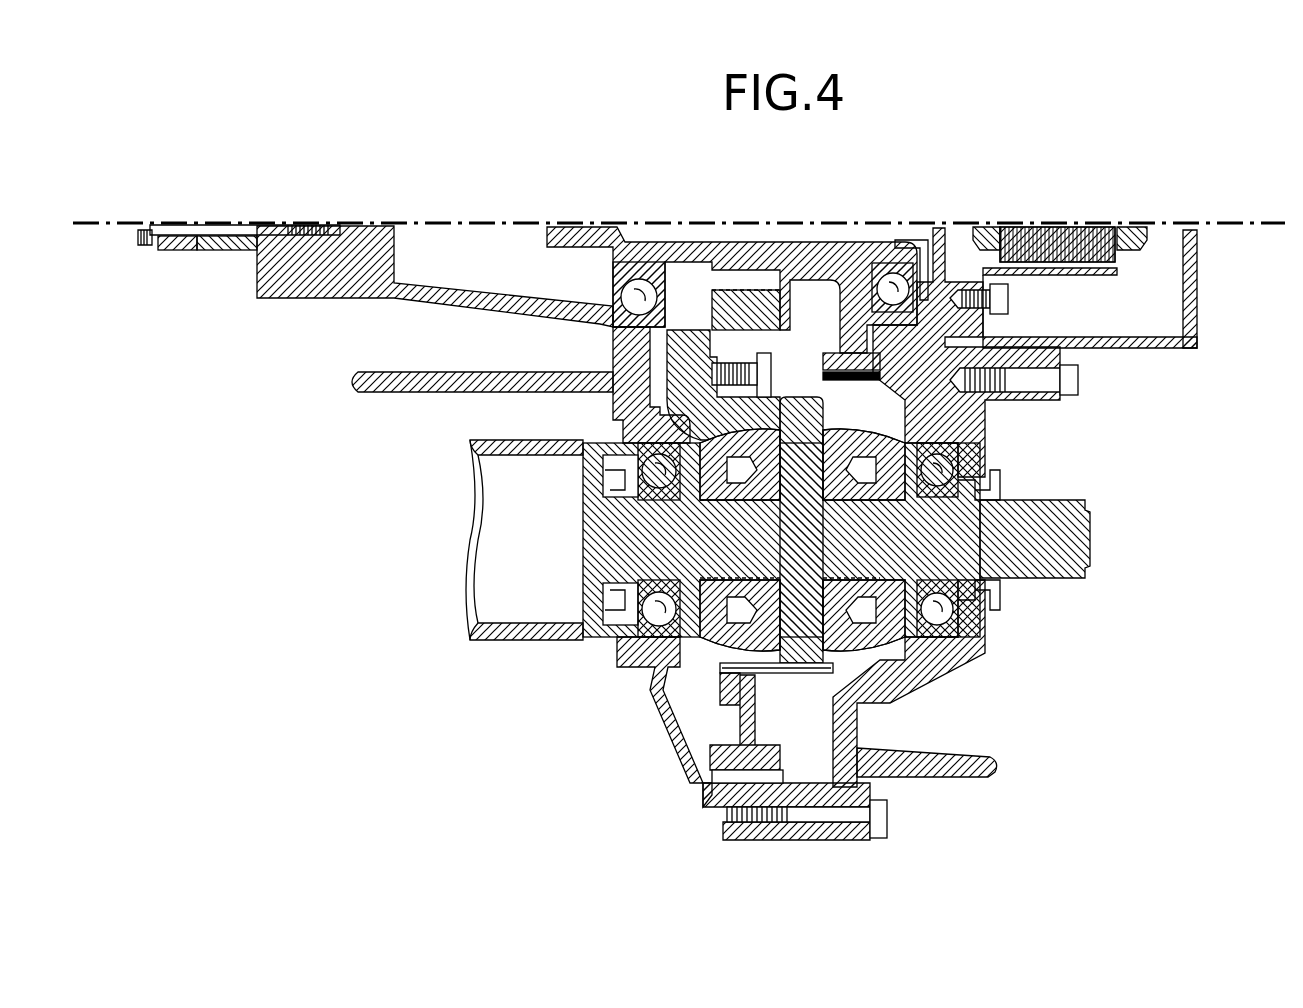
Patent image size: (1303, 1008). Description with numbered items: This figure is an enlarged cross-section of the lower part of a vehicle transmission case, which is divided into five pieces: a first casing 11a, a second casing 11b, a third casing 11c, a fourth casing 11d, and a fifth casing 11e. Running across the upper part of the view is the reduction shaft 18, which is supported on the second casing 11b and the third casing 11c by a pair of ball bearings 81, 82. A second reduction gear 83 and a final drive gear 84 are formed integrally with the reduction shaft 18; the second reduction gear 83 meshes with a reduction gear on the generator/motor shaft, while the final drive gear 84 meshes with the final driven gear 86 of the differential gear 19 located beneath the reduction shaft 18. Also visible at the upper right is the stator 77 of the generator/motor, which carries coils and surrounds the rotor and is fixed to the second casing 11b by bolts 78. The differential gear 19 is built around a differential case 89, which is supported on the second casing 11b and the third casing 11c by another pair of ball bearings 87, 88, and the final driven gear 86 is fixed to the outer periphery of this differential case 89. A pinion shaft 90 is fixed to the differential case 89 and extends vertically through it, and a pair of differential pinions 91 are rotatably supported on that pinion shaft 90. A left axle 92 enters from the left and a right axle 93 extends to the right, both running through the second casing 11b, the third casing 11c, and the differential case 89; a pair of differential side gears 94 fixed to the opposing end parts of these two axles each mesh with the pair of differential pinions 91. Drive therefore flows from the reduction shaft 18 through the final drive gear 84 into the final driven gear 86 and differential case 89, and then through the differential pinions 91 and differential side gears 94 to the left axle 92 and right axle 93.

The reduction shaft 18 is at (790, 258).
The differential gear 19 is at (698, 683).
The first casing 11a is at (1108, 345).
The second casing 11b is at (918, 777).
The third casing 11c is at (325, 283).
The fourth casing 11d is at (222, 250).
The fifth casing 11e is at (183, 243).
The stator 77 is at (1117, 284).
The bolts 78 is at (1010, 300).
The ball bearing 81 is at (893, 288).
The ball bearing 82 is at (640, 296).
The second reduction gear 83 is at (870, 375).
The final drive gear 84 is at (708, 295).
The final driven gear 86 is at (790, 322).
The ball bearing 87 is at (943, 612).
The ball bearing 88 is at (660, 612).
The differential case 89 is at (905, 672).
The pinion shaft 90 is at (802, 655).
The differential pinions 91 is at (843, 445).
The left axle 92 is at (552, 640).
The right axle 93 is at (1060, 565).
The differential side gears 94 is at (758, 505).